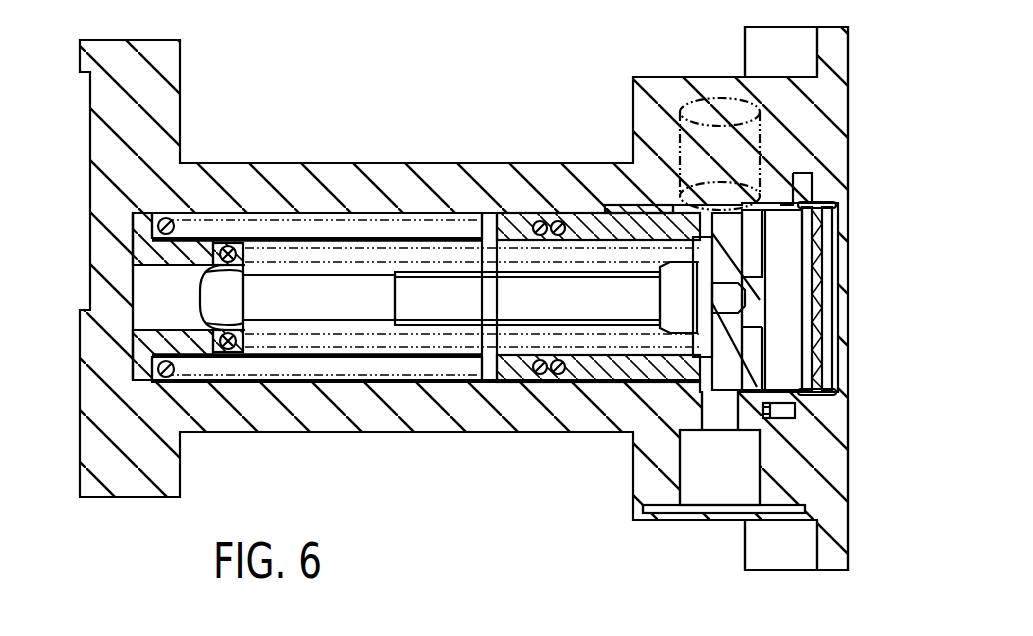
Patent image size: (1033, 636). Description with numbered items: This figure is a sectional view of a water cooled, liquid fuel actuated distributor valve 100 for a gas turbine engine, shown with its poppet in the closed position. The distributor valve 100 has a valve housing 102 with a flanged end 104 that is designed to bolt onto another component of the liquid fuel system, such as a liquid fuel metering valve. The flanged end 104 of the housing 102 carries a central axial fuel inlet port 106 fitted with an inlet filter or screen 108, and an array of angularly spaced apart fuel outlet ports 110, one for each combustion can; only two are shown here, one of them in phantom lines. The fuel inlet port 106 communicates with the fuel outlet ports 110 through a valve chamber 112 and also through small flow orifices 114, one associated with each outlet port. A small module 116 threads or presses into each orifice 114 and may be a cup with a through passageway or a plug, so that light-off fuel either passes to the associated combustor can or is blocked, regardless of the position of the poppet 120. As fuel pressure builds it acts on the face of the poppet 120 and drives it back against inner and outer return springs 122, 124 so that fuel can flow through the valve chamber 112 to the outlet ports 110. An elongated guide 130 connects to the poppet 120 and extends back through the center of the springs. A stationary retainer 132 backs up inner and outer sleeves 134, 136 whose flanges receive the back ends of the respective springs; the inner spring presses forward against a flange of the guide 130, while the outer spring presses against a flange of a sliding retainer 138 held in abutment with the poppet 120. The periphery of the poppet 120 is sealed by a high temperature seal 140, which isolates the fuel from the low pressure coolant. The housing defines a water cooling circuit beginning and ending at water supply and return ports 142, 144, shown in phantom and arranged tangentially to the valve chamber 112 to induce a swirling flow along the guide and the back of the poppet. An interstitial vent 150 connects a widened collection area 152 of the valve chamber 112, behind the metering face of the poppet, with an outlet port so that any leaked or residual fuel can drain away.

The distributor valve 100 is at (510, 53).
The valve housing 102 is at (368, 163).
The flanged end 104 is at (838, 62).
The fuel inlet port 106 is at (838, 417).
The inlet filter or screen 108 is at (822, 315).
The fuel outlet ports 110 is at (713, 96).
The valve chamber 112 is at (450, 212).
The flow orifices 114 is at (756, 440).
The module 116 is at (838, 448).
The poppet 120 is at (742, 262).
The inner return spring 122 is at (228, 382).
The outer return spring 124 is at (147, 352).
The elongated guide 130 is at (517, 309).
The stationary retainer 132 is at (133, 345).
The inner sleeve 134 is at (298, 280).
The outer sleeve 136 is at (358, 383).
The sliding retainer 138 is at (550, 384).
The high temperature seal 140 is at (580, 348).
The water supply port 142 is at (271, 214).
The water return port 144 is at (455, 357).
The interstitial vent 150 is at (668, 447).
The collection area 152 is at (640, 383).